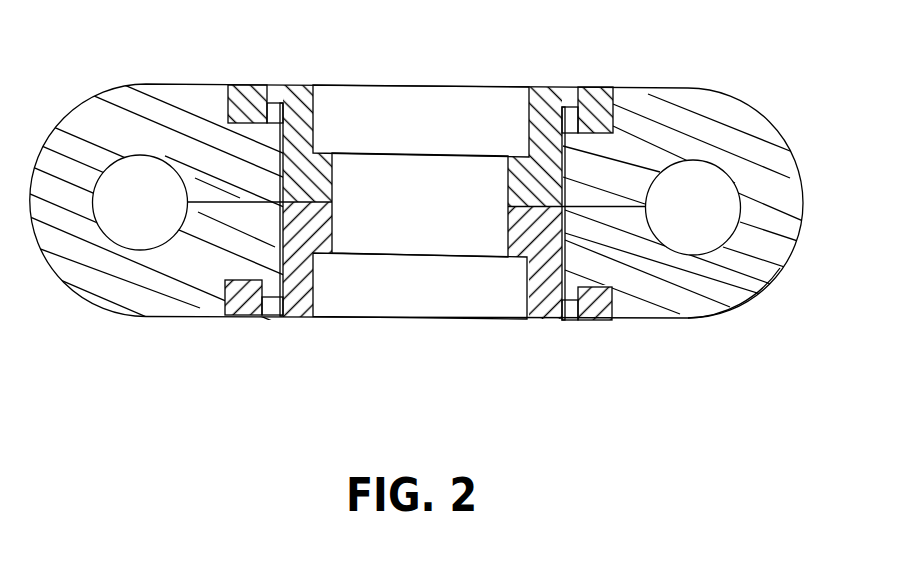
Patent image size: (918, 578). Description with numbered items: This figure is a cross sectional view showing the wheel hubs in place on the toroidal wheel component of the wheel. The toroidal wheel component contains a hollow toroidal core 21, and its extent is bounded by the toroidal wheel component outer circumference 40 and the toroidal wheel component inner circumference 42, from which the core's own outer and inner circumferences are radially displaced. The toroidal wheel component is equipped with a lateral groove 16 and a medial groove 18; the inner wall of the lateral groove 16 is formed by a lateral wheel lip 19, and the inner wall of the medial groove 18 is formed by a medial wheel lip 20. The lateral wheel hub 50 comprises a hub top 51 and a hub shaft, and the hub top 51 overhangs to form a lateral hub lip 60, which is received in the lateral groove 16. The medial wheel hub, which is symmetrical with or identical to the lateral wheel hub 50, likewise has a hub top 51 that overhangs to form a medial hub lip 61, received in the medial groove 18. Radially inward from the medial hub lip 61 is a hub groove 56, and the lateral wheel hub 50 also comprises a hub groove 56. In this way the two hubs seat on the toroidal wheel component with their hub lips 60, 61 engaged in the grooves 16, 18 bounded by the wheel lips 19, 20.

The lateral groove 16 is at (590, 275).
The medial groove 18 is at (245, 293).
The lateral wheel lip 19 is at (570, 293).
The medial wheel lip 20 is at (273, 292).
The hollow toroidal core 21 is at (138, 212).
The toroidal wheel component outer circumference 40 is at (803, 222).
The toroidal wheel component inner circumference 42 is at (715, 306).
The lateral wheel hub 50 is at (542, 285).
The hub top 51 is at (422, 85).
The hub groove 56 is at (268, 105).
The lateral hub lip 60 is at (237, 105).
The medial hub lip 61 is at (598, 297).